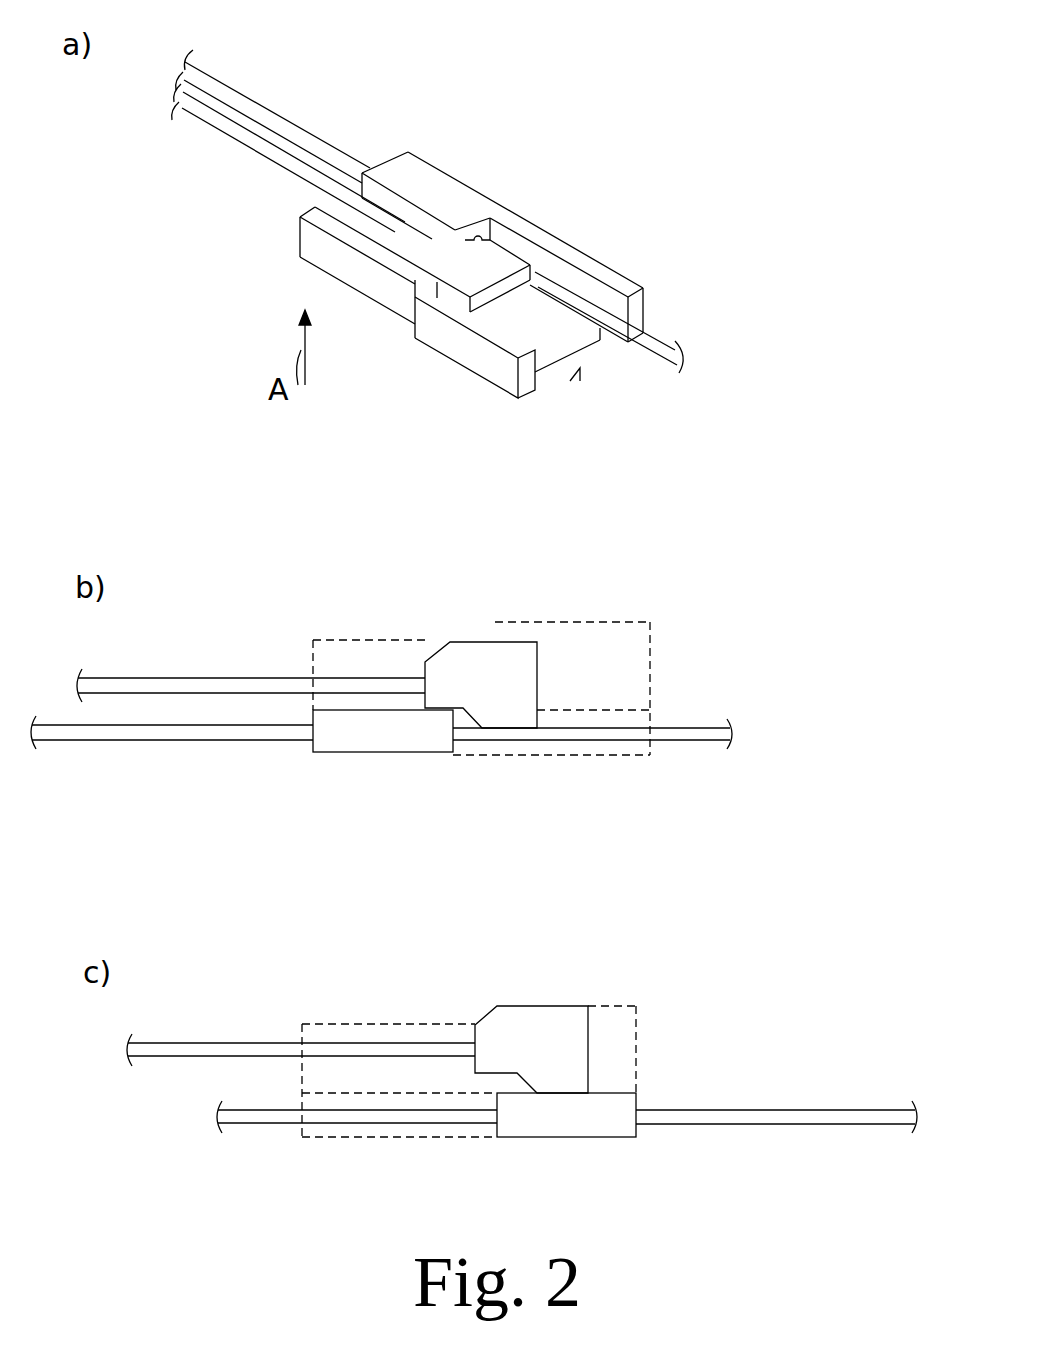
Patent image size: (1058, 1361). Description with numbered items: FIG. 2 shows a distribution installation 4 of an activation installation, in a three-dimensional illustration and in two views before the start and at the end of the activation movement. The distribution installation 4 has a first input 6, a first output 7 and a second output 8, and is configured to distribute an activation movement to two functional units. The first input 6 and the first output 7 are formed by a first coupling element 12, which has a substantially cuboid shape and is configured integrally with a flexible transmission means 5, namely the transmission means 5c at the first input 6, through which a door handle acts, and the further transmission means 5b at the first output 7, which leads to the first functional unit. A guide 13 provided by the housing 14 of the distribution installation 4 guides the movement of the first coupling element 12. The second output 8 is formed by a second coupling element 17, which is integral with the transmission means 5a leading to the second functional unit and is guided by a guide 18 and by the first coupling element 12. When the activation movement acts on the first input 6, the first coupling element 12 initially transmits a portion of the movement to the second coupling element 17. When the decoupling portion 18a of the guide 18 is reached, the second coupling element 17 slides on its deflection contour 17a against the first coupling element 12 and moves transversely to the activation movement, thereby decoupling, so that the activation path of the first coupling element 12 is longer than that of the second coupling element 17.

The distribution installation 4 is at (668, 96).
The flexible transmission means 5 is at (474, 607).
The transmission means 5a is at (227, 128).
The further transmission means 5b is at (265, 112).
The transmission means 5c is at (653, 352).
The first input 6 is at (478, 220).
The first output 7 is at (388, 164).
The second output 8 is at (432, 257).
The first coupling element 12 is at (426, 186).
The guide 13 is at (580, 283).
The housing 14 is at (530, 382).
The second coupling element 17 is at (458, 272).
The deflection contour 17a is at (645, 355).
The guide 18 is at (326, 203).
The decoupling portion 18a is at (470, 275).